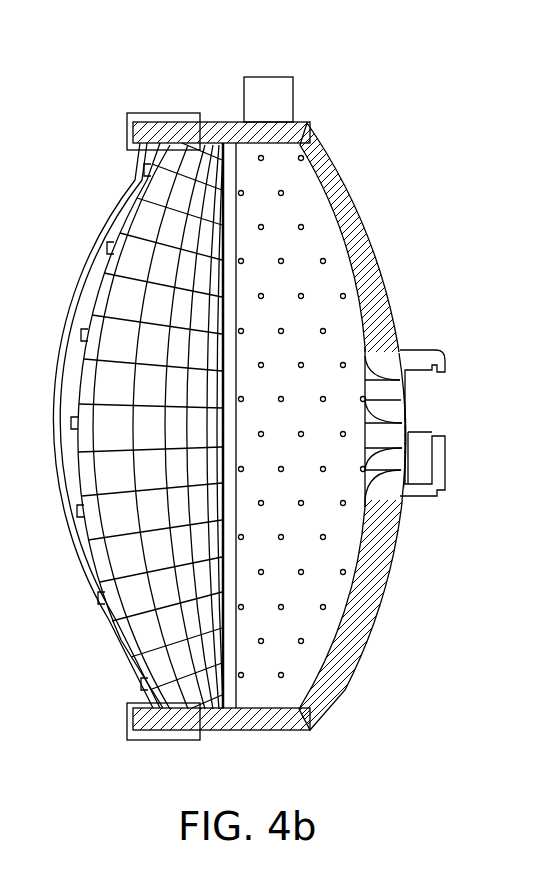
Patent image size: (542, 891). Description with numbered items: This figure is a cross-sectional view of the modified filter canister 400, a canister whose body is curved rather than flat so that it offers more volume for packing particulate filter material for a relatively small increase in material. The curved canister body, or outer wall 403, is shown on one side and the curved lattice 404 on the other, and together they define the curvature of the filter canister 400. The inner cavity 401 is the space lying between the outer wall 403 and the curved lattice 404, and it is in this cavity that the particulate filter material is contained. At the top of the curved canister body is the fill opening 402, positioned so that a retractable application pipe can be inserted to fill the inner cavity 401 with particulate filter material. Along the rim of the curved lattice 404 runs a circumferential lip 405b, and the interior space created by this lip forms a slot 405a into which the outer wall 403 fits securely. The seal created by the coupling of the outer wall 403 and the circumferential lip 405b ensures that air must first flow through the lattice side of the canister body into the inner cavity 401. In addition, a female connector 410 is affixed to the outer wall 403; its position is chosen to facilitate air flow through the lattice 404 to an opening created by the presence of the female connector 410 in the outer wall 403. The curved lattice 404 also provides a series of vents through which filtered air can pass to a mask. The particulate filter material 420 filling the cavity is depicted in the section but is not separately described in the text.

The modified filter canister 400 is at (393, 144).
The inner cavity 401 is at (335, 272).
The fill opening 402 is at (268, 77).
The curved canister body (outer wall) 403 is at (327, 690).
The curved lattice 404 is at (115, 592).
The slot 405a is at (212, 133).
The circumferential lip 405b is at (135, 116).
The female connector 410 is at (443, 358).
The perforated liner 420 is at (330, 587).